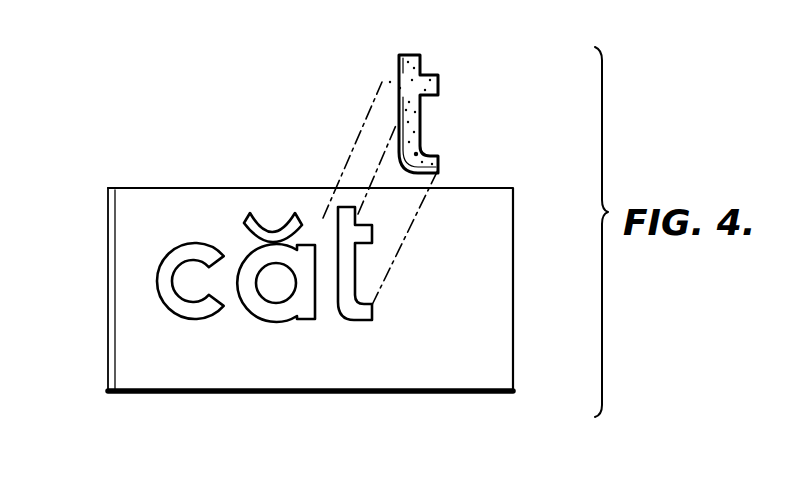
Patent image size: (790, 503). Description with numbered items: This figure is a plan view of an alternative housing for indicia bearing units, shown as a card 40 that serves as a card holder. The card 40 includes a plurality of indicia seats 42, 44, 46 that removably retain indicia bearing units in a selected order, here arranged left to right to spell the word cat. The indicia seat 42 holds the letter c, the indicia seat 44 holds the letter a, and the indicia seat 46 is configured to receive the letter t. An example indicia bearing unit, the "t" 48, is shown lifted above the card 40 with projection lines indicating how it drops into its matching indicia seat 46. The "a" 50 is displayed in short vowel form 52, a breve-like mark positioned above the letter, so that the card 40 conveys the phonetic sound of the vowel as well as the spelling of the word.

The card 40 is at (498, 364).
The indicia seat 42 is at (162, 265).
The indicia seat 44 is at (252, 316).
The indicia seat 46 is at (338, 318).
The indicia bearing unit "t" 48 is at (446, 81).
The "a" indicia 50 is at (240, 244).
The short vowel form 52 is at (272, 222).